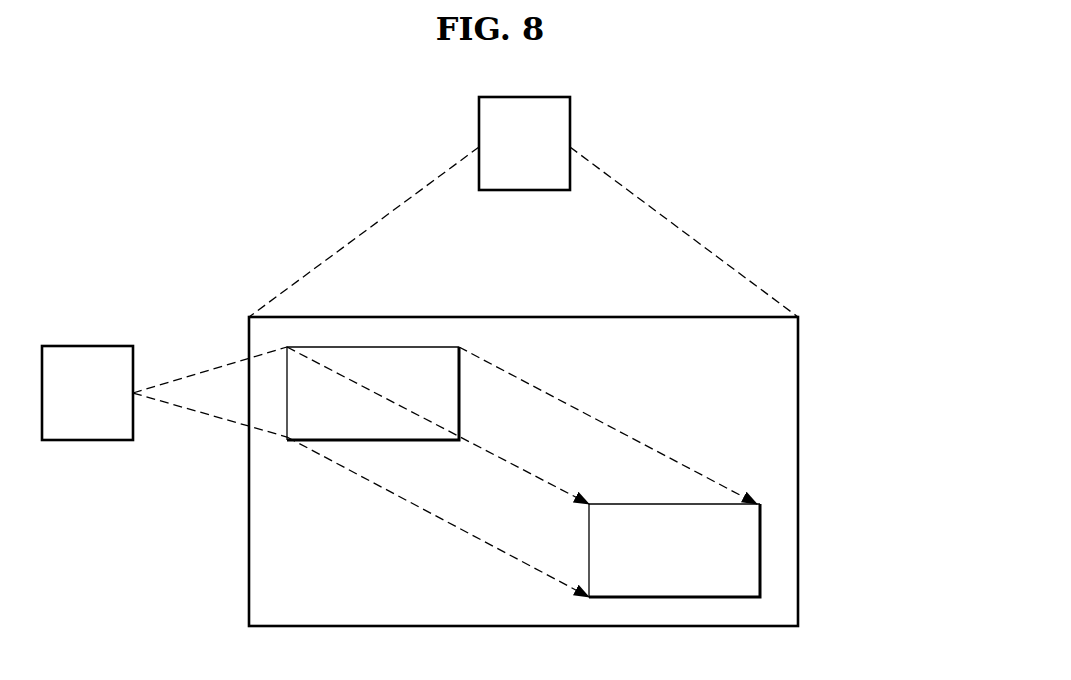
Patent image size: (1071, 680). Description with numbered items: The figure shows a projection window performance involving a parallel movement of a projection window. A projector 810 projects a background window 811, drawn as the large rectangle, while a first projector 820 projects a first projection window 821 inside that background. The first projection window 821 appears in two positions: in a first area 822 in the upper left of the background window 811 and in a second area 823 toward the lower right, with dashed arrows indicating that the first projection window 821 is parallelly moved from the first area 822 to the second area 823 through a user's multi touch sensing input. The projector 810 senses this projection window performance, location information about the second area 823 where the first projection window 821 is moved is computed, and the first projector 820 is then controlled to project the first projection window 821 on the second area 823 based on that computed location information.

The projector 810 is at (524, 143).
The background window 811 is at (523, 471).
The first projector 820 is at (87, 393).
The first projection window 821 is at (411, 347).
The first area 822 is at (373, 393).
The second area 823 is at (674, 550).